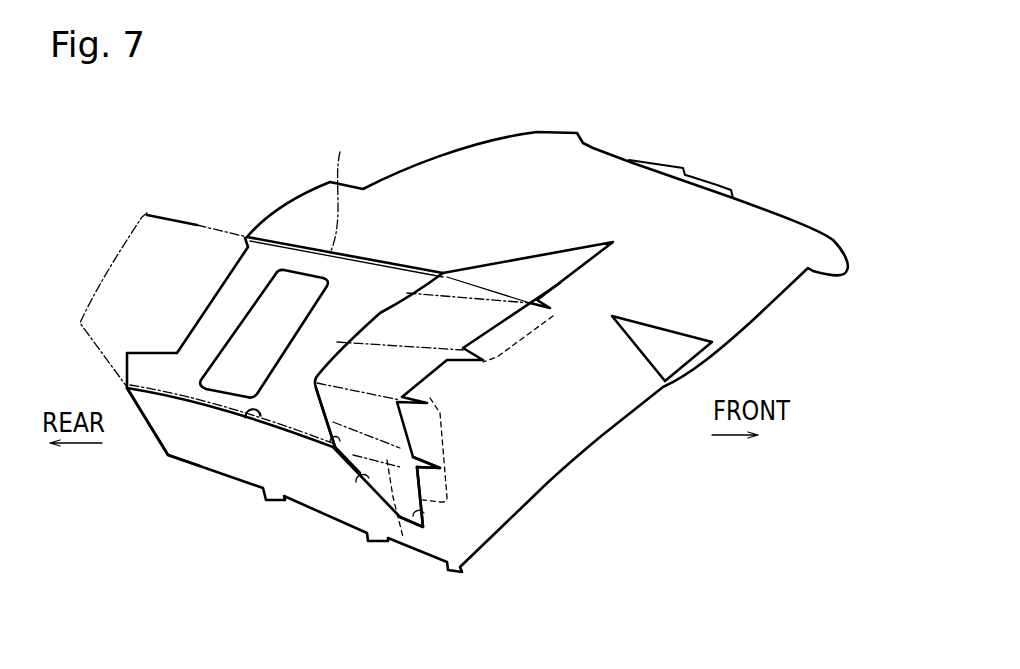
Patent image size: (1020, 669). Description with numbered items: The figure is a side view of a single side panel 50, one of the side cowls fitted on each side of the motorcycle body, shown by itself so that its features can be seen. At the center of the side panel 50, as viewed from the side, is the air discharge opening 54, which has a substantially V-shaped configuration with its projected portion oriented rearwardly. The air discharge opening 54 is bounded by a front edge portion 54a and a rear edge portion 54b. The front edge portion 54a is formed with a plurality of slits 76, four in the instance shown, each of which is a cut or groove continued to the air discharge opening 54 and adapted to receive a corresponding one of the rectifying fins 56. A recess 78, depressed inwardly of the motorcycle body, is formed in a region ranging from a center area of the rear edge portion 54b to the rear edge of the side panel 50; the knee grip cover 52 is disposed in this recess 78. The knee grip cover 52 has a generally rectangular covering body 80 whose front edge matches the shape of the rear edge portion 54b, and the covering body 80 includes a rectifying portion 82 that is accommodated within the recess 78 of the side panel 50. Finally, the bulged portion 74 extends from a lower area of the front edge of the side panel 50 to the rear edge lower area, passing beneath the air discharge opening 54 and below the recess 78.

The side panel 50 is at (646, 153).
The knee grip cover 52 is at (183, 218).
The air discharge opening 54 is at (365, 478).
The front edge portion 54a is at (427, 518).
The rear edge portion 54b is at (340, 453).
The rectifying fins 56 is at (398, 470).
The bulged portion 74 is at (180, 442).
The slits 76 is at (447, 467).
The recess 78 is at (247, 412).
The covering body 80 is at (465, 216).
The rectifying portion 82 is at (465, 216).